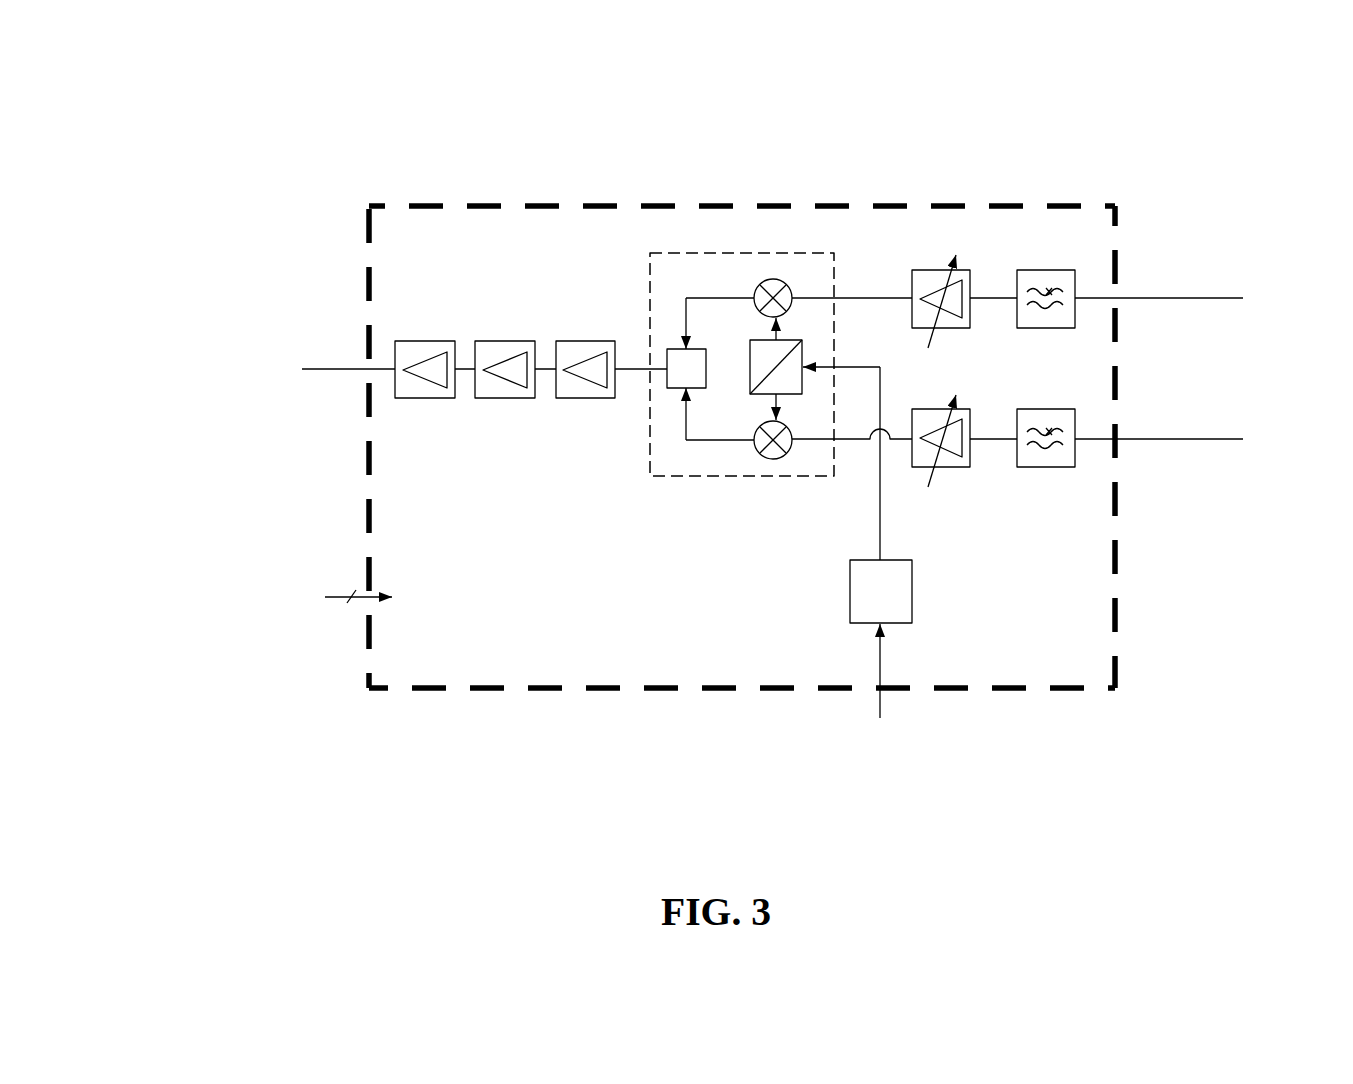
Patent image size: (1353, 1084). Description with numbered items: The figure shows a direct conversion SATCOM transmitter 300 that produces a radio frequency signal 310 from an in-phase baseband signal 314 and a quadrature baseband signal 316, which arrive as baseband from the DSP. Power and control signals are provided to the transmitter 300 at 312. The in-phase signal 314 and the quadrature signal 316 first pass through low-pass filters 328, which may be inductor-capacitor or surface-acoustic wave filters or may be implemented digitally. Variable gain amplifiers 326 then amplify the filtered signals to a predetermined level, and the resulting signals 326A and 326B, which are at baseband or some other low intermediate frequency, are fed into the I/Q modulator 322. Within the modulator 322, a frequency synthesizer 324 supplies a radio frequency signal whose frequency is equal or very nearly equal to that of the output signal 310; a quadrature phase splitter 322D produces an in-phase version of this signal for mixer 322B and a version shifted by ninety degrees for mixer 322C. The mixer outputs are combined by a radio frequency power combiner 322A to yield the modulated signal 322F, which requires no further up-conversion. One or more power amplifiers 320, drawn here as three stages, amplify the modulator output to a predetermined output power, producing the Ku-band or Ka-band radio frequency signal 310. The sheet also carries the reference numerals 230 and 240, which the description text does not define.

The direct conversion SATCOM transmitter 300 is at (568, 183).
The modulator section 230 is at (786, 279).
The baseband interface section 240 is at (996, 149).
The radio frequency signal 310 is at (335, 372).
The power and control signals 312 is at (332, 602).
The in-phase baseband signal 314 is at (1178, 294).
The quadrature baseband signal 316 is at (1198, 446).
The power amplifiers 320 is at (490, 410).
The I/Q modulator 322 is at (754, 386).
The radio frequency power combiner 322A is at (673, 392).
The mixer 322B is at (775, 278).
The mixer 322C is at (777, 464).
The quadrature phase splitter 322D is at (806, 356).
The resulting signal 322F is at (637, 365).
The frequency synthesizer 324 is at (916, 620).
The variable gain amplifiers 326 is at (946, 337).
The signal 326A is at (862, 297).
The signal 326B is at (896, 446).
The low-pass filters 328 is at (1066, 267).